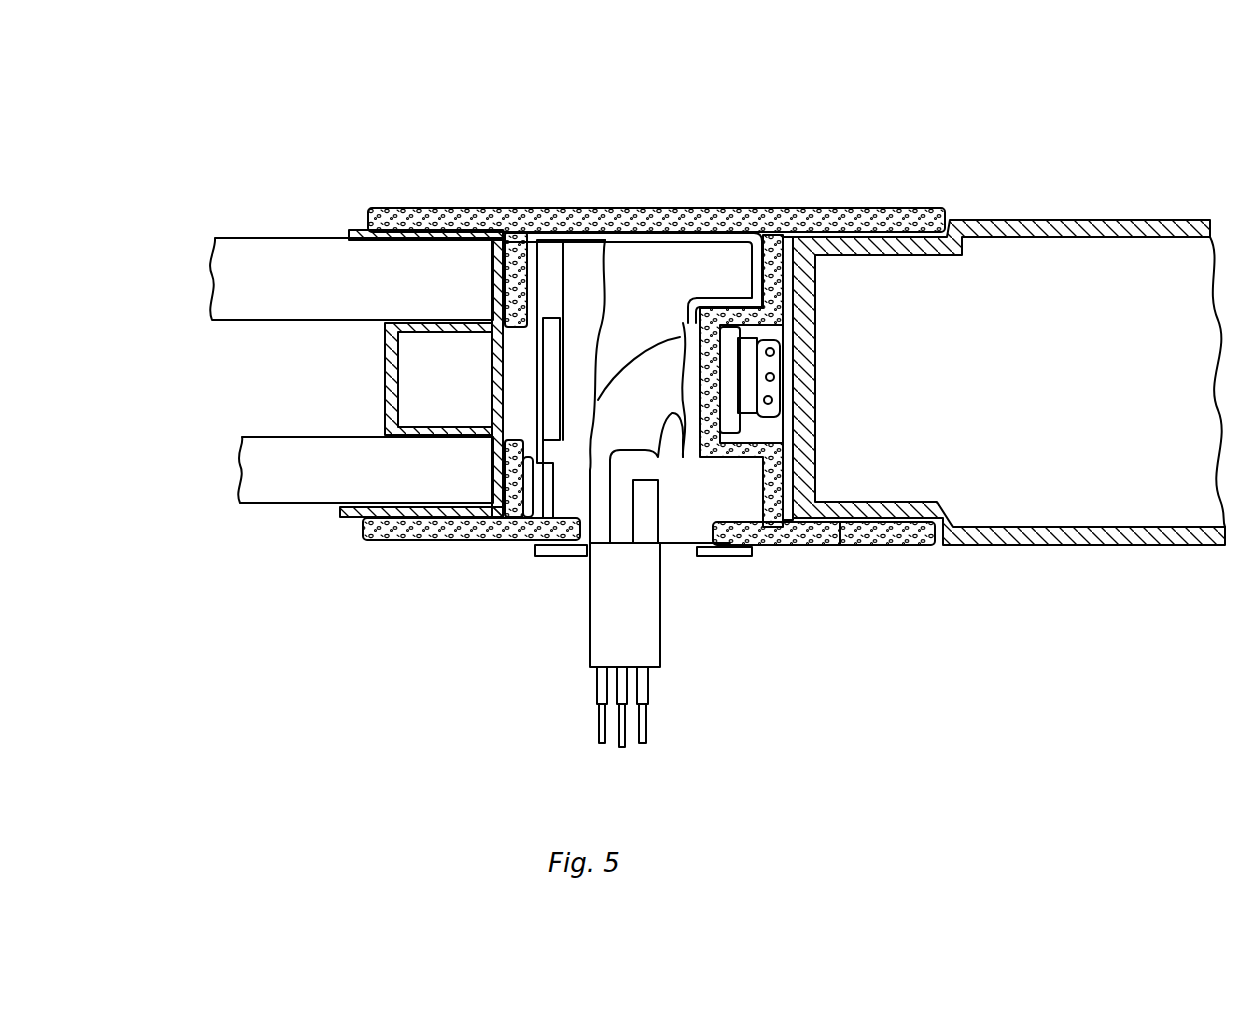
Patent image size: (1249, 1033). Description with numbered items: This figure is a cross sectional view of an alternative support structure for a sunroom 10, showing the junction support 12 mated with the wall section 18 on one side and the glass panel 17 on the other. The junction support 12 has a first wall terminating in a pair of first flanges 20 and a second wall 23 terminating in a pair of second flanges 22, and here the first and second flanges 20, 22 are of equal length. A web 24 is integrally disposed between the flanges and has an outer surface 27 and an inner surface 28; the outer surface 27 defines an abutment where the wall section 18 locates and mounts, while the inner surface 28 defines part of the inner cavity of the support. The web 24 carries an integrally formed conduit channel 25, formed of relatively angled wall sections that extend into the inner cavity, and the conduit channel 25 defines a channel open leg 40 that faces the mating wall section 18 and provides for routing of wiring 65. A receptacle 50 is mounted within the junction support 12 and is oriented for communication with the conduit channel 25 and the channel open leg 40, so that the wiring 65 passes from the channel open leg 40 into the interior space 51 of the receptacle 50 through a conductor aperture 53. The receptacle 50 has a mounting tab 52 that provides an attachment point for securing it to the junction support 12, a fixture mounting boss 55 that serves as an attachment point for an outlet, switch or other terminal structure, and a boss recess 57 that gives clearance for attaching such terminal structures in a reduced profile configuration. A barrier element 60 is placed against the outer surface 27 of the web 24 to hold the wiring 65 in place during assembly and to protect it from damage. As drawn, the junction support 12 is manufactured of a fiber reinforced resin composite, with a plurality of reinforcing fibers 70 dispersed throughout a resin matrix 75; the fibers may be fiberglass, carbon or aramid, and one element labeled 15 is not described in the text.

The sunroom 10 is at (590, 225).
The junction support 12 is at (726, 140).
The foam layer 15 is at (608, 391).
The glass panel 17 is at (200, 205).
The wall section 18 is at (1098, 213).
The first flanges 20 is at (607, 407).
The second flanges 22 is at (420, 225).
The second wall 23 is at (656, 185).
The web 24 is at (477, 228).
The conduit channel 25 is at (684, 322).
The outer surface 27 is at (780, 303).
The inner surface 28 is at (762, 276).
The channel open leg 40 is at (515, 415).
The receptacle 50 is at (580, 565).
The interior space 51 is at (622, 347).
The mounting tab 52 is at (553, 560).
The conductor aperture 53 is at (740, 330).
The fixture mounting boss 55 is at (645, 515).
The boss recess 57 is at (676, 562).
The barrier element 60 is at (783, 468).
The wiring 65 is at (605, 640).
The reinforcing fibers 70 is at (598, 407).
The resin matrix 75 is at (840, 545).